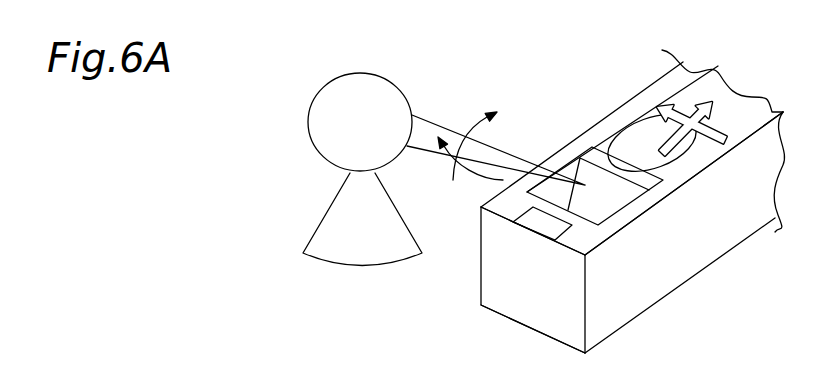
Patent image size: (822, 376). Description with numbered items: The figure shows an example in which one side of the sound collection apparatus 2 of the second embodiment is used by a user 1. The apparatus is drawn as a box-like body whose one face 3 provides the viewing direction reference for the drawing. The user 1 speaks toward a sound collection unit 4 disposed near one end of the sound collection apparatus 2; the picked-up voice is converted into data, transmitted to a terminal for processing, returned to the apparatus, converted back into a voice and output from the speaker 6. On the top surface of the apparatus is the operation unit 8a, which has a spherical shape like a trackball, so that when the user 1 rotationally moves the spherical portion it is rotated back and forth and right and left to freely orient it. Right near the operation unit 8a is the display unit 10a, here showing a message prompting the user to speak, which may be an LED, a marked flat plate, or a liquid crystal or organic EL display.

The user 1 is at (310, 114).
The sound collection apparatus 2 is at (735, 222).
The one face 3 is at (508, 278).
The sound collection unit 4 is at (536, 222).
The speaker 6 is at (713, 90).
The operation unit 8a is at (614, 134).
The display unit 10a is at (570, 168).